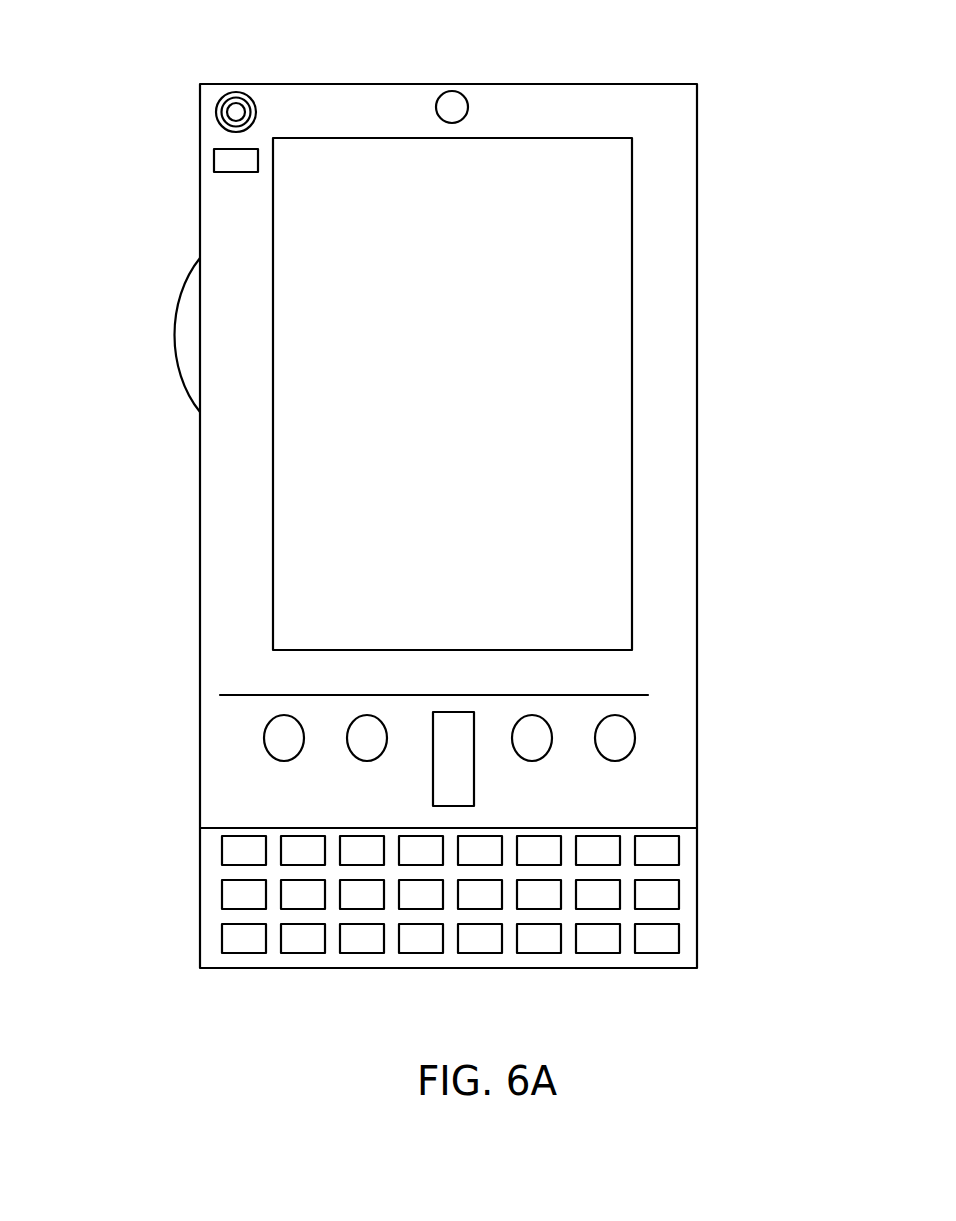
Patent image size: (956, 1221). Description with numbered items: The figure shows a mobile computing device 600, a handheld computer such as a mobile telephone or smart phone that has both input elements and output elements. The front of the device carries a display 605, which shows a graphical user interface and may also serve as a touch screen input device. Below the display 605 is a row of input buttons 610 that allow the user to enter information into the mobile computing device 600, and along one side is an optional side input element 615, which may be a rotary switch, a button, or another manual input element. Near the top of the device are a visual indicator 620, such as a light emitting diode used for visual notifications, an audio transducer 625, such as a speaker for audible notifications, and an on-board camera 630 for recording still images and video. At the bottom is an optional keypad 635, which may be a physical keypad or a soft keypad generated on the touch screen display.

The mobile computing device 600 is at (686, 100).
The display 605 is at (385, 563).
The input buttons 610 is at (452, 765).
The side input element 615 is at (190, 333).
The visual indicator 620 is at (215, 165).
The audio transducer 625 is at (215, 112).
The on-board camera 630 is at (462, 107).
The keypad 635 is at (208, 943).